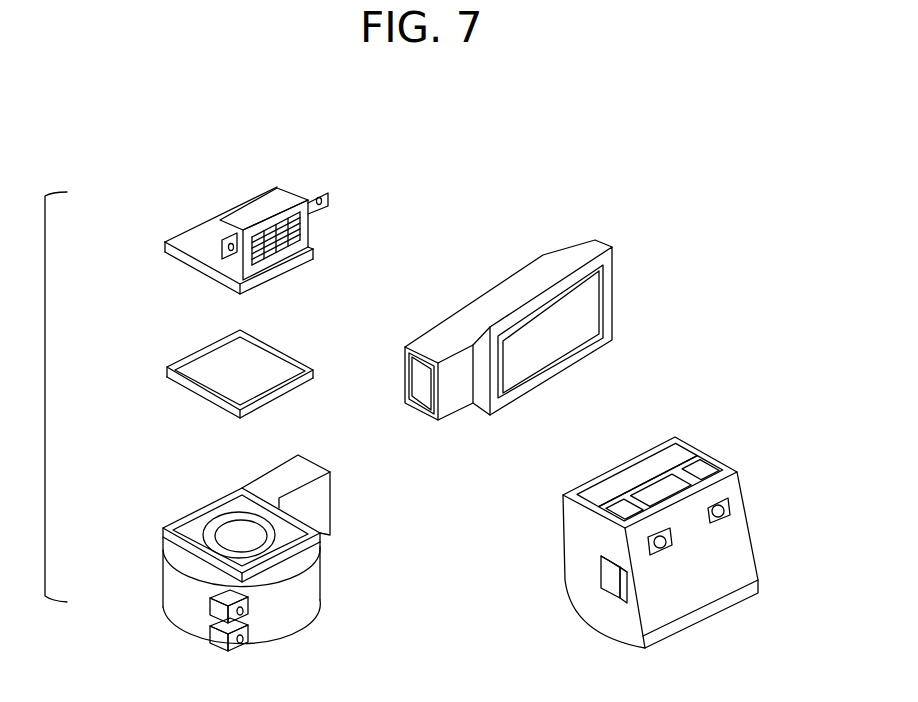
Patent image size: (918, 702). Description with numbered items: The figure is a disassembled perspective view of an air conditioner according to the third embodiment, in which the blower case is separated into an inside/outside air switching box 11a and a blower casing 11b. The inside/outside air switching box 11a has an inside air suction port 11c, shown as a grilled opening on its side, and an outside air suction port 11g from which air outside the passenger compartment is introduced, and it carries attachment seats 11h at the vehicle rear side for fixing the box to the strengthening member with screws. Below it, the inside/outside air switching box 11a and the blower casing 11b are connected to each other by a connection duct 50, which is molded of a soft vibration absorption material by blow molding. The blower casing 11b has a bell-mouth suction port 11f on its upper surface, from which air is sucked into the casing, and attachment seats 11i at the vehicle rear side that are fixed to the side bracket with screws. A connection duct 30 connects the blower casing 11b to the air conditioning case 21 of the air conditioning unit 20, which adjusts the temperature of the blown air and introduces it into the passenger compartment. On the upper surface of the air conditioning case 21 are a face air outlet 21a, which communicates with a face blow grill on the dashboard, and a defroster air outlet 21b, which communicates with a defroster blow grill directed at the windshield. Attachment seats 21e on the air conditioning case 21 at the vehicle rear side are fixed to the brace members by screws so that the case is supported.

The inside/outside air switching box 11a is at (178, 232).
The blower casing 11b is at (225, 558).
The inside air suction port 11c is at (284, 231).
The bell-mouth suction port 11f is at (224, 536).
The outside air suction port 11g is at (218, 219).
The attachment seats 11h is at (225, 239).
The attachment seats 11i is at (248, 608).
The connection duct 50 is at (185, 355).
The connection duct 30 is at (619, 283).
The air conditioning unit 20 is at (661, 525).
The air conditioning case 21 is at (661, 511).
The face air outlet 21a is at (663, 488).
The defroster air outlet 21b is at (618, 482).
The attachment seats 21e is at (729, 503).